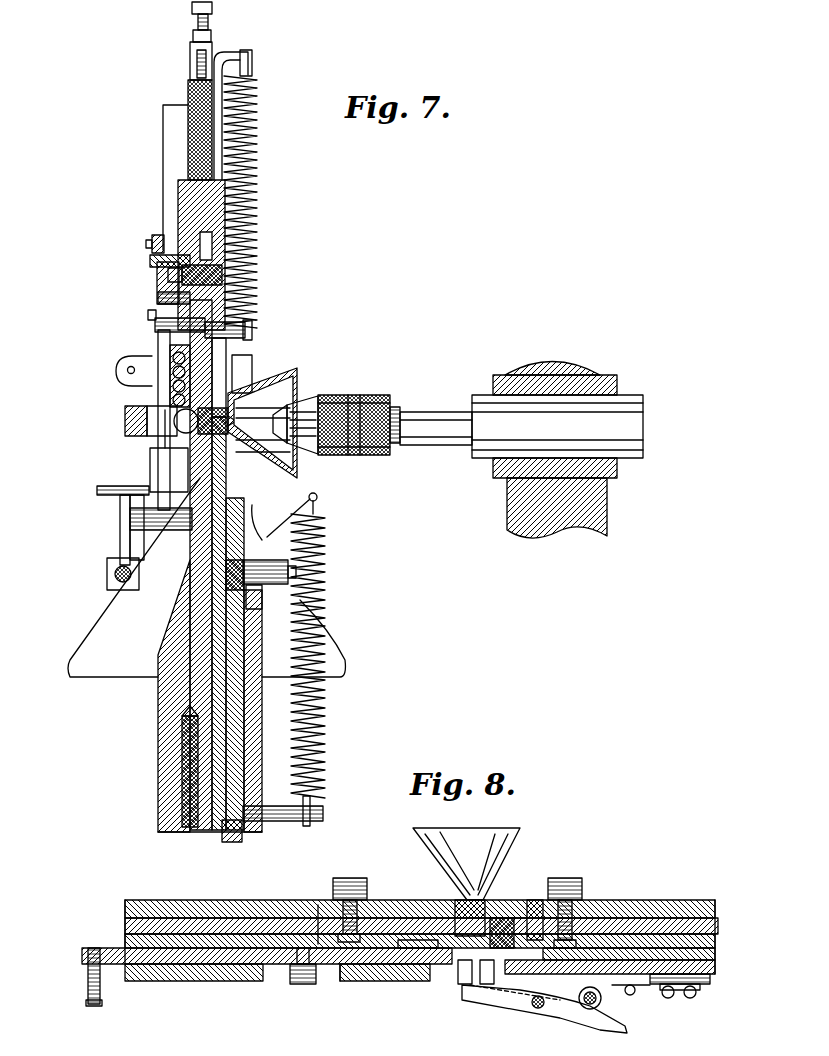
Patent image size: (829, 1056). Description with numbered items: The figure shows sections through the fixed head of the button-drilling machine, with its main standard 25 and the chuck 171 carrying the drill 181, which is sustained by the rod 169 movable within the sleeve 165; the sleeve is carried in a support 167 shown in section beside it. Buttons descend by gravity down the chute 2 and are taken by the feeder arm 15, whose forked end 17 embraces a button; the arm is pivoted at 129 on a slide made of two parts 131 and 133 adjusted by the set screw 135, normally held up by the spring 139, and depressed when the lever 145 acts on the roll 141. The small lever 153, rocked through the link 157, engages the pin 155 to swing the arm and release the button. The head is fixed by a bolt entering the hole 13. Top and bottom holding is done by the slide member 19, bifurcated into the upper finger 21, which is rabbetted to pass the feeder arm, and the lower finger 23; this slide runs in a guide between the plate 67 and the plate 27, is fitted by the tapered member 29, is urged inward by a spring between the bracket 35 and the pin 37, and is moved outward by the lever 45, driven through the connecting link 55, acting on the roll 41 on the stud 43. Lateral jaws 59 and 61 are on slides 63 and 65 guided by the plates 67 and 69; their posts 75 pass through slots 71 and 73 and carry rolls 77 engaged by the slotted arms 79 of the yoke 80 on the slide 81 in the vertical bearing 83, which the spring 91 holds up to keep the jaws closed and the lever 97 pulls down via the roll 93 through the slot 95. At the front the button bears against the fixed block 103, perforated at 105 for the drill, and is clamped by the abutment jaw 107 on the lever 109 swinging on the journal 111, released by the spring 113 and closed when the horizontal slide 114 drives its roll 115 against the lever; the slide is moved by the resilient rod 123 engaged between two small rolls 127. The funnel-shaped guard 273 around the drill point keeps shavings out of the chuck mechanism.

In FIG. 7, the chute 2 is at (170, 150).
In FIG. 7, the hole 13 is at (184, 768).
In FIG. 7, the feeder arm 15 is at (158, 276).
In FIG. 7, the forked end 17 is at (172, 350).
In FIG. 8, the slide member 19 is at (226, 966).
In FIG. 7, the upper finger 21 is at (172, 400).
In FIG. 7, the lower finger 23 is at (190, 432).
In FIG. 8, the lower finger 23 is at (402, 970).
In FIG. 7, the main standard 25 is at (215, 220).
In FIG. 8, the main standard 25 is at (252, 900).
In FIG. 7, the plate 27 is at (118, 490).
In FIG. 8, the plate 27 is at (360, 978).
In FIG. 7, the tapered member 29 is at (161, 527).
In FIG. 7, the bracket 35 is at (124, 360).
In FIG. 8, the pin 37 is at (88, 980).
In FIG. 8, the roll 41 is at (314, 980).
In FIG. 8, the stud 43 is at (300, 984).
In FIG. 7, the lever 45 is at (120, 528).
In FIG. 7, the connecting link 55 is at (112, 572).
In FIG. 8, the jaw 59 is at (458, 975).
In FIG. 8, the jaw 61 is at (491, 971).
In FIG. 8, the slide member 63 is at (132, 924).
In FIG. 8, the slide member 65 is at (655, 924).
In FIG. 8, the plate 67 is at (197, 940).
In FIG. 8, the plate 69 is at (716, 950).
In FIG. 8, the slot 71 is at (334, 898).
In FIG. 8, the slot 73 is at (540, 898).
In FIG. 8, the post 75 is at (348, 878).
In FIG. 8, the roll 77 is at (362, 890).
In FIG. 7, the arm 79 is at (244, 380).
In FIG. 7, the yoke 80 is at (226, 532).
In FIG. 7, the slide 81 is at (232, 718).
In FIG. 7, the vertical bearing 83 is at (250, 758).
In FIG. 7, the spring 91 is at (326, 696).
In FIG. 7, the roll 93 is at (272, 586).
In FIG. 7, the slot 95 is at (240, 594).
In FIG. 7, the lever 97 is at (284, 515).
In FIG. 7, the fixed block 103 is at (178, 460).
In FIG. 8, the fixed block 103 is at (500, 920).
In FIG. 8, the perforation 105 is at (458, 904).
In FIG. 7, the abutment jaw 107 is at (160, 436).
In FIG. 8, the abutment jaw 107 is at (464, 986).
In FIG. 7, the lever 109 is at (126, 422).
In FIG. 8, the lever 109 is at (580, 1006).
In FIG. 8, the vertical journal 111 is at (536, 1008).
In FIG. 8, the spring 113 is at (500, 994).
In FIG. 8, the horizontal slide 114 is at (650, 988).
In FIG. 8, the roll 115 is at (592, 1010).
In FIG. 8, the resilient rod 123 is at (688, 1000).
In FIG. 8, the small rolls 127 is at (696, 990).
In FIG. 7, the pivot 129 is at (149, 320).
In FIG. 7, the slide part 131 is at (200, 126).
In FIG. 7, the slide part 133 is at (190, 62).
In FIG. 7, the set screw 135 is at (192, 20).
In FIG. 7, the spring 139 is at (258, 172).
In FIG. 7, the roll 141 is at (222, 271).
In FIG. 7, the lever 145 is at (152, 257).
In FIG. 7, the small lever 153 is at (148, 246).
In FIG. 7, the pin 155 is at (156, 236).
In FIG. 7, the link 157 is at (160, 298).
In FIG. 7, the sleeve 165 is at (630, 410).
In FIG. 7, the bearing block 167 is at (600, 502).
In FIG. 7, the rod 169 is at (440, 428).
In FIG. 7, the chuck 171 is at (372, 402).
In FIG. 7, the drill 181 is at (292, 450).
In FIG. 8, the funnel-shaped guard 273 is at (480, 840).